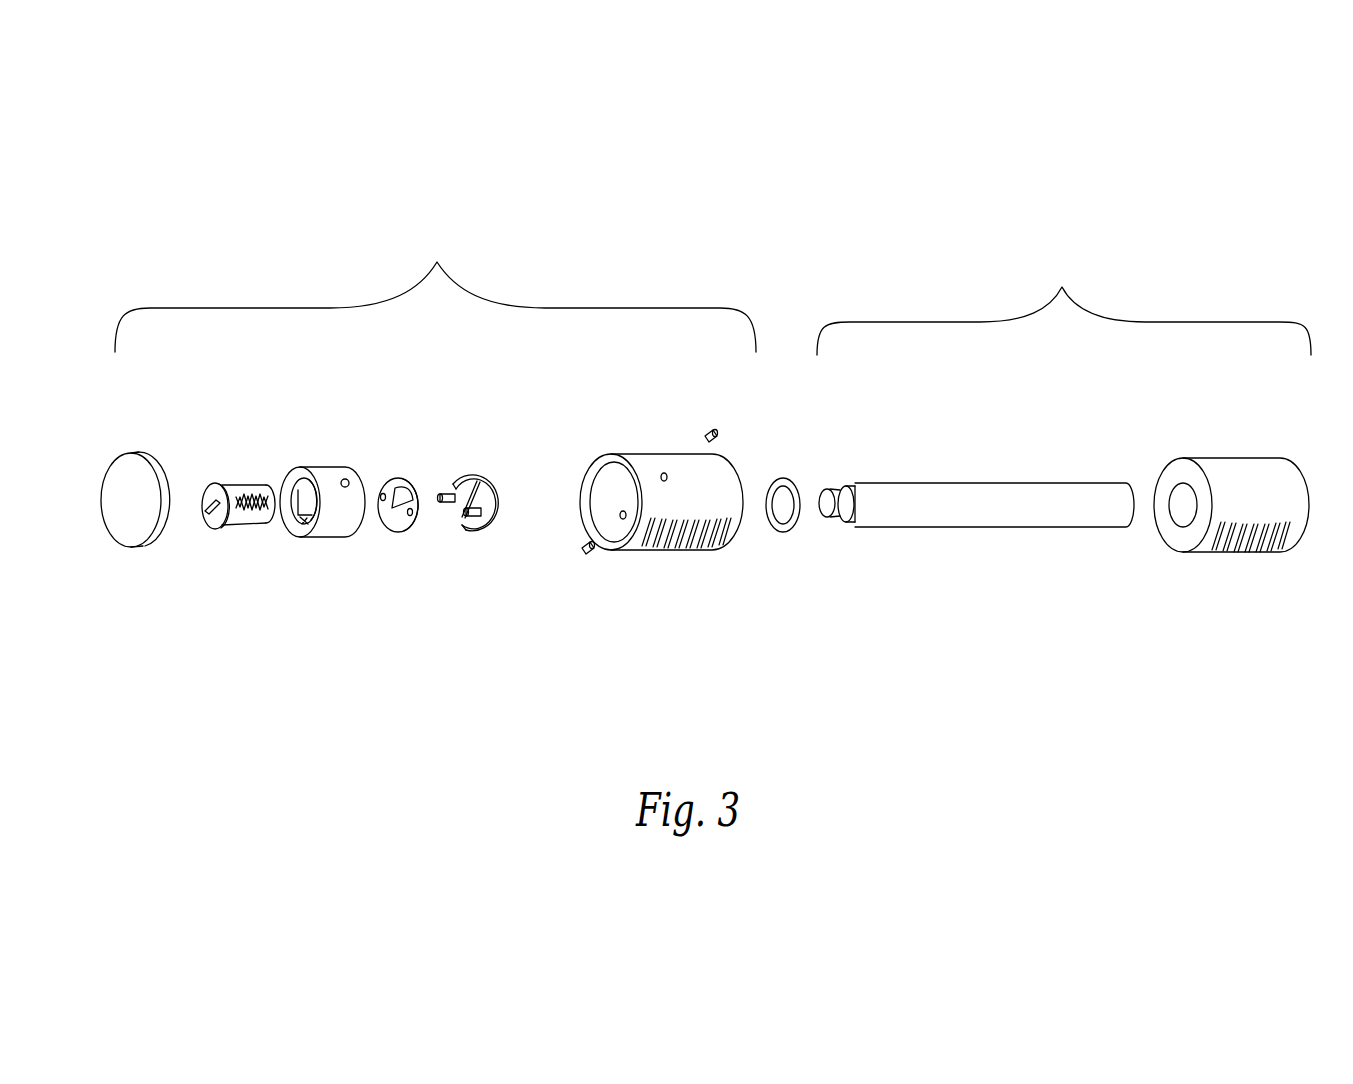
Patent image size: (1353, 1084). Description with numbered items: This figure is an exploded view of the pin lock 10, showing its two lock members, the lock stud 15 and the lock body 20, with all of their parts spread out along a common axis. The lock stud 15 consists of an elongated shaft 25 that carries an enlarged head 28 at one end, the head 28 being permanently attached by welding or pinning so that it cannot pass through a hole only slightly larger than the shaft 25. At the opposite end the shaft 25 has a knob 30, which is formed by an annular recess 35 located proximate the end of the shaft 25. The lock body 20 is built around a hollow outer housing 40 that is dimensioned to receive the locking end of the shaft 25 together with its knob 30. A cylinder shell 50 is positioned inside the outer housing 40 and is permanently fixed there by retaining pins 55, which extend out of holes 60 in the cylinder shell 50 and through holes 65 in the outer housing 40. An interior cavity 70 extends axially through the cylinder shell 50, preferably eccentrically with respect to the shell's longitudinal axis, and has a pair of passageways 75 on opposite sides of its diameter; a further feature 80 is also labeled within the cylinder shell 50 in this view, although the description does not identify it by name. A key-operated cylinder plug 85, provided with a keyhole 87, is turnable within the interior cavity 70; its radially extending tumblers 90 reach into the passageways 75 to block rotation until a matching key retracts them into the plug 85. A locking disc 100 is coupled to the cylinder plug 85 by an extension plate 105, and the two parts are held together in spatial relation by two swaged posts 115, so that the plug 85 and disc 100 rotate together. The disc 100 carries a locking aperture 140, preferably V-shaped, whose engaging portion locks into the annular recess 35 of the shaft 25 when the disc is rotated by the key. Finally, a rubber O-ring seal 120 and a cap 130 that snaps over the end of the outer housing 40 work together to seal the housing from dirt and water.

The pin lock 10 is at (925, 247).
The lock stud 15 is at (1064, 302).
The lock body 20 is at (435, 288).
The elongated shaft 25 is at (972, 551).
The enlarged head 28 is at (1236, 556).
The knob 30 is at (826, 510).
The annular recess 35 is at (845, 522).
The outer housing 40 is at (650, 486).
The cylinder shell 50 is at (313, 470).
The retaining pins 55 is at (708, 432).
The holes 60 is at (345, 479).
The holes 65 is at (666, 482).
The interior cavity 70 is at (297, 489).
The passageways 75 is at (305, 523).
The slot 80 is at (286, 508).
The cylinder plug 85 is at (209, 443).
The keyhole 87 is at (207, 499).
The tumblers 90 is at (250, 492).
The locking disc 100 is at (470, 480).
The extension plate 105 is at (393, 480).
The posts 115 is at (465, 516).
The O-ring seal 120 is at (780, 532).
The cap 130 is at (150, 551).
The locking aperture 140 is at (462, 520).